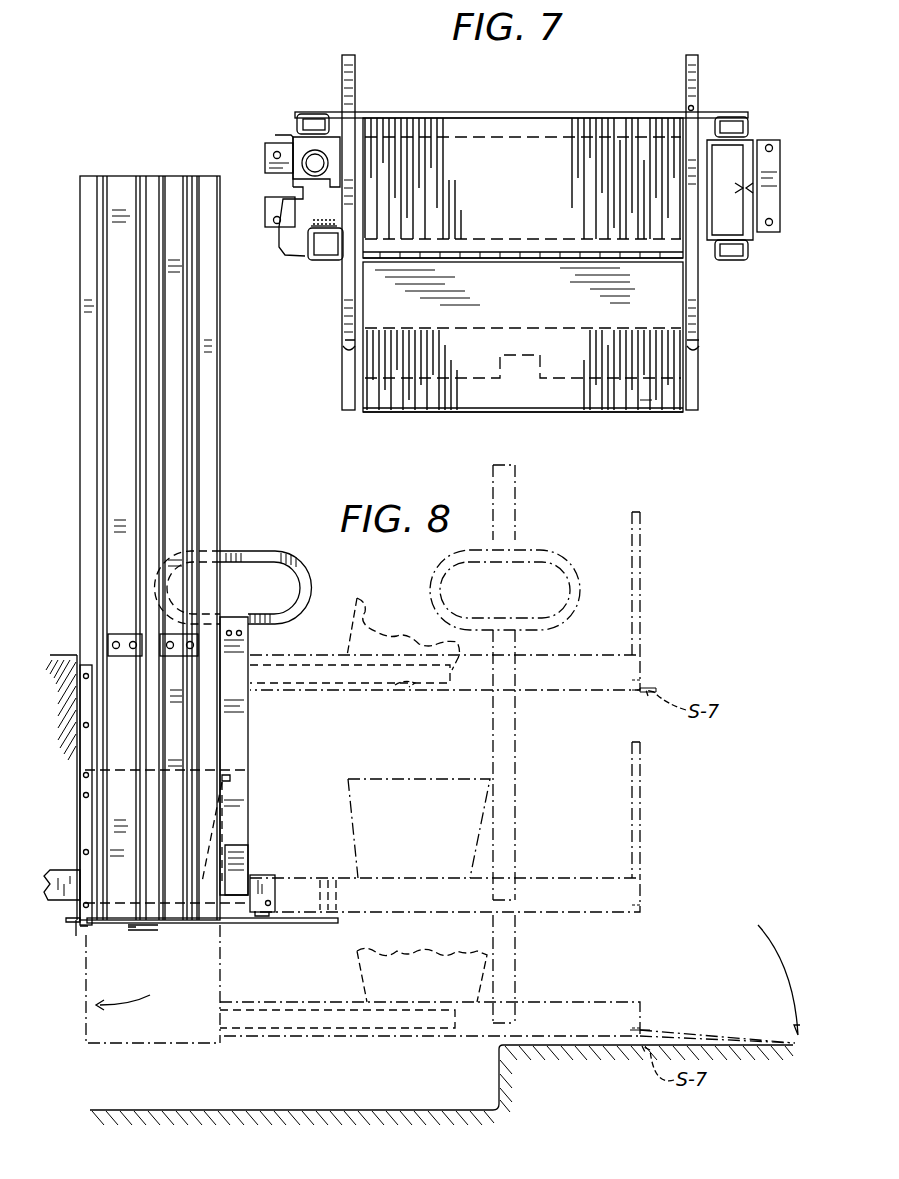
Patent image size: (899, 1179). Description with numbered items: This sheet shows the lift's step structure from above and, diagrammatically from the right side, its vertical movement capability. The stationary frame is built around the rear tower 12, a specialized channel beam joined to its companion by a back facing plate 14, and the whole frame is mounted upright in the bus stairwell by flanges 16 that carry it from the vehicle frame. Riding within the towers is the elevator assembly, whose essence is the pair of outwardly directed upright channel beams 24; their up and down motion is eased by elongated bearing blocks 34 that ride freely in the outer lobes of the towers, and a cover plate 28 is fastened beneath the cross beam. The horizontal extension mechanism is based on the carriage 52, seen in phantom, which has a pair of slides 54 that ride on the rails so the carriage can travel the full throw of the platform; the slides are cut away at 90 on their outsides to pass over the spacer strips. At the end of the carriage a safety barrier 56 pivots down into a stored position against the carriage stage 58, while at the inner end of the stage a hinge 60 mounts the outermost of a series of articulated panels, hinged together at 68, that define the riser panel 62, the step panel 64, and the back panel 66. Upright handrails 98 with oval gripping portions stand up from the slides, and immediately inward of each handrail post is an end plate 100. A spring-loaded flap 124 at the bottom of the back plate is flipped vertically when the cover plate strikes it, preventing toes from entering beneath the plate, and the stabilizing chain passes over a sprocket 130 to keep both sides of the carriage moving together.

In FIG. 7, the rear tower 12 is at (290, 264).
In FIG. 8, the rear tower 12 is at (108, 163).
In FIG. 7, the back facing plate 14 is at (450, 116).
In FIG. 7, the flanges 16 is at (266, 208).
In FIG. 8, the flanges 16 is at (176, 632).
In FIG. 7, the upright channel beams 24 is at (328, 154).
In FIG. 8, the cover plate 28 is at (274, 920).
In FIG. 7, the bearing blocks 34 is at (312, 114).
In FIG. 8, the carriage 52 is at (650, 636).
In FIG. 7, the slides 54 is at (348, 400).
In FIG. 8, the slides 54 is at (584, 654).
In FIG. 7, the safety barrier 56 is at (635, 400).
In FIG. 8, the safety barrier 56 is at (642, 551).
In FIG. 7, the carriage surface or stage 58 is at (533, 304).
In FIG. 8, the hinge 60 is at (369, 896).
In FIG. 8, the riser panel 62 is at (216, 818).
In FIG. 7, the step panel 64 is at (536, 202).
In FIG. 8, the step panel 64 is at (218, 758).
In FIG. 8, the back panel 66 is at (76, 836).
In FIG. 7, the hinge 68 is at (568, 264).
In FIG. 8, the cut away 90 is at (394, 684).
In FIG. 7, the upright handrails 98 is at (344, 352).
In FIG. 8, the upright handrails 98 is at (268, 550).
In FIG. 8, the end plate 100 is at (404, 581).
In FIG. 8, the spring-loaded flap 124 is at (147, 928).
In FIG. 7, the sprocket 130 is at (310, 228).